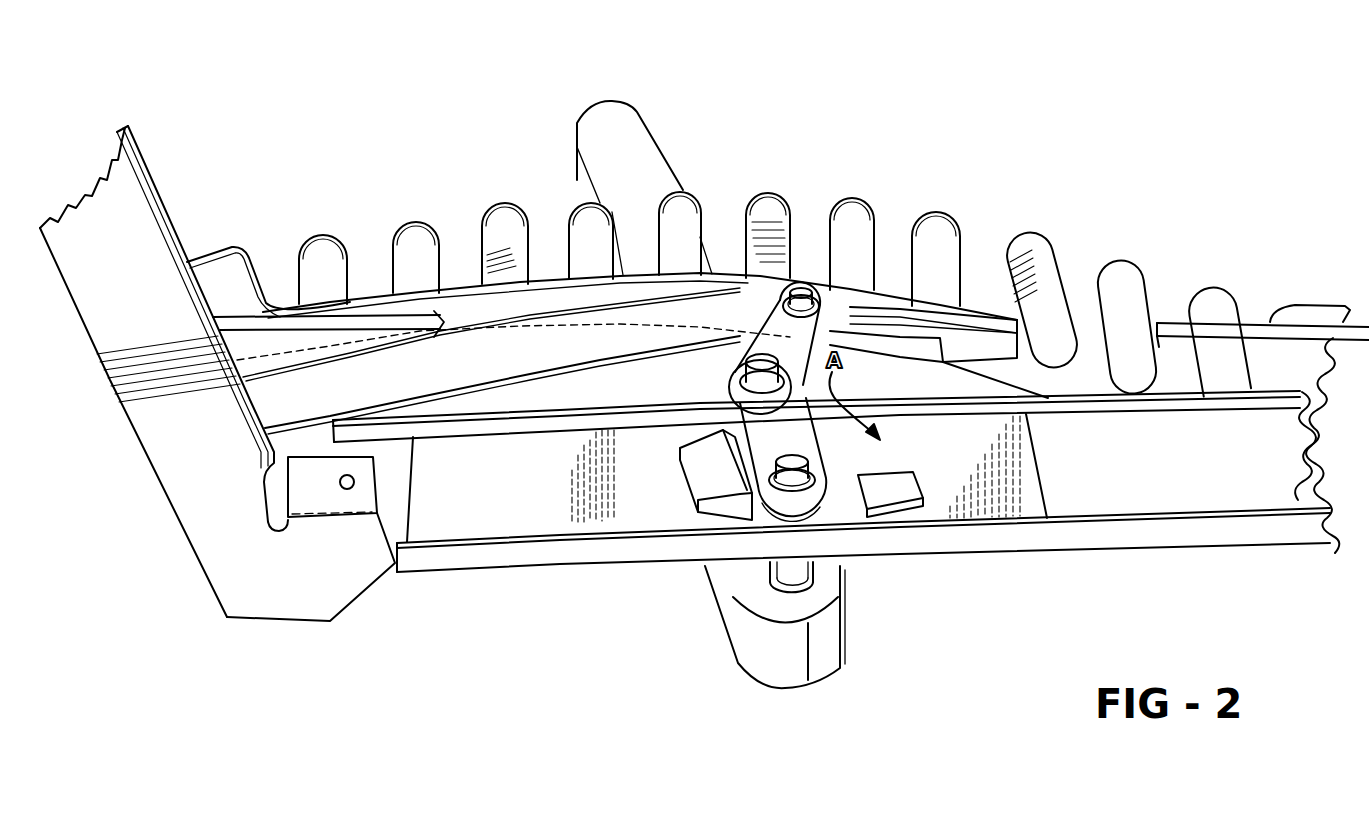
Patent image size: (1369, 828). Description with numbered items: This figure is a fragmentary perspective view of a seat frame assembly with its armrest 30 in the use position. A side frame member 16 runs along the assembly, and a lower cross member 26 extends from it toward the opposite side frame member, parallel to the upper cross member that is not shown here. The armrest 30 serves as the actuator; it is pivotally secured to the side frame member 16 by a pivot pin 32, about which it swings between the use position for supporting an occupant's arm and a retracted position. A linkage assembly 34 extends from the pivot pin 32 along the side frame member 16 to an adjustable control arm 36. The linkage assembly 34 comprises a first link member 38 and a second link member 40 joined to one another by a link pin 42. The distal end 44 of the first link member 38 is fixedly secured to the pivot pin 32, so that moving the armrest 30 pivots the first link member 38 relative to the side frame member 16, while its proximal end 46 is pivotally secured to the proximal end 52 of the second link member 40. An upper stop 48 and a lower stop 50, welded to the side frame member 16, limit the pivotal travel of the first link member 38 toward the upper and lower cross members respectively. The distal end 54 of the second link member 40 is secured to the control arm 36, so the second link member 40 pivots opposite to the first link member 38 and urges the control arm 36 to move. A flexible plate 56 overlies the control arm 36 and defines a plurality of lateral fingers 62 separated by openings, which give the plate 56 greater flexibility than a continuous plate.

The side frame member 16 is at (1153, 540).
The lower cross member 26 is at (150, 203).
The armrest 30 is at (640, 133).
The pivot pin 32 is at (787, 480).
The linkage assembly 34 is at (846, 381).
The control arm 36 is at (968, 307).
The first link member 38 is at (826, 482).
The second link member 40 is at (830, 320).
The link pin 42 is at (750, 362).
The distal end 44 is at (805, 448).
The proximal end 46 is at (712, 405).
The upper stop 48 is at (920, 488).
The lower stop 50 is at (733, 487).
The proximal end 52 is at (737, 450).
The distal end 54 is at (820, 288).
The plate 56 is at (1313, 308).
The lateral fingers 62 is at (417, 232).